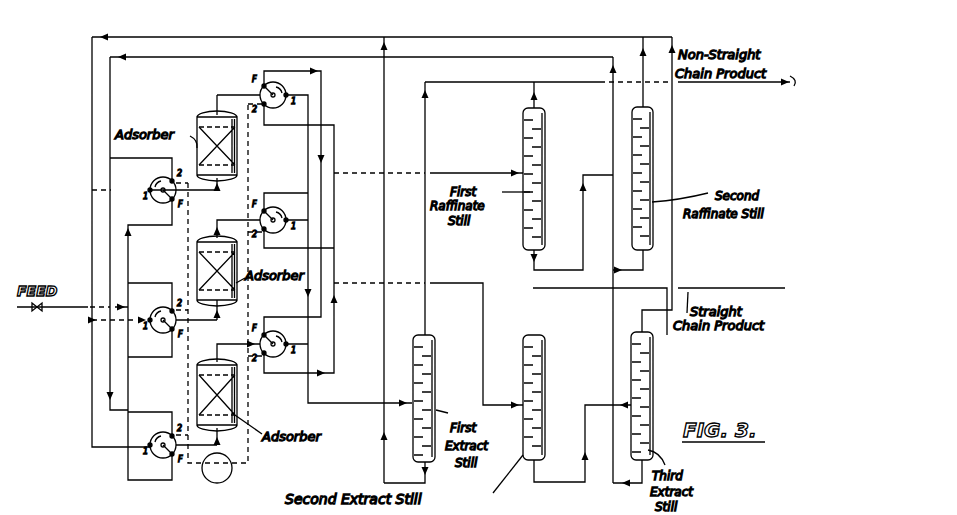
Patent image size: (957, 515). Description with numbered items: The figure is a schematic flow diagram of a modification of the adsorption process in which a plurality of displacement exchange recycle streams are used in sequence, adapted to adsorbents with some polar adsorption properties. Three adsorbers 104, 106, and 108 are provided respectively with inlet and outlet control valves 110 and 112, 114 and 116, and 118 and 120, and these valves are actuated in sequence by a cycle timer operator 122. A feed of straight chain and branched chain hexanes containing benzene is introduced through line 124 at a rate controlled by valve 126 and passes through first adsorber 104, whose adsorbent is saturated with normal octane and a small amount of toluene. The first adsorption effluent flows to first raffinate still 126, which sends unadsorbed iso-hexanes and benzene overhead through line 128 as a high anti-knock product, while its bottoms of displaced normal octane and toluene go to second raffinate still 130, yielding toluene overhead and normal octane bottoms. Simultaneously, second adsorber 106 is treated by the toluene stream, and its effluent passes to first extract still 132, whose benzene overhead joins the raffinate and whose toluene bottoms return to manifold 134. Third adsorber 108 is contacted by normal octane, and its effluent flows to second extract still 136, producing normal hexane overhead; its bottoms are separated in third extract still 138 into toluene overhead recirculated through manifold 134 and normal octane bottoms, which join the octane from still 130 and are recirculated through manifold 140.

The first adsorber 104 is at (197, 120).
The second adsorber 106 is at (197, 255).
The third adsorber 108 is at (197, 378).
The inlet control valve 110 is at (156, 178).
The outlet control valve 112 is at (286, 92).
The inlet control valve 114 is at (164, 307).
The outlet control valve 116 is at (287, 215).
The inlet control valve 118 is at (164, 433).
The outlet control valve 120 is at (268, 357).
The cycle timer operator 122 is at (210, 484).
The feed line 124 is at (70, 309).
The first raffinate still 126 is at (34, 311).
The line 128 is at (720, 85).
The second raffinate still 130 is at (643, 120).
The first extract still 132 is at (436, 338).
The manifold 134 is at (320, 36).
The second extract still 136 is at (546, 338).
The third extract still 138 is at (652, 343).
The manifold 140 is at (432, 56).